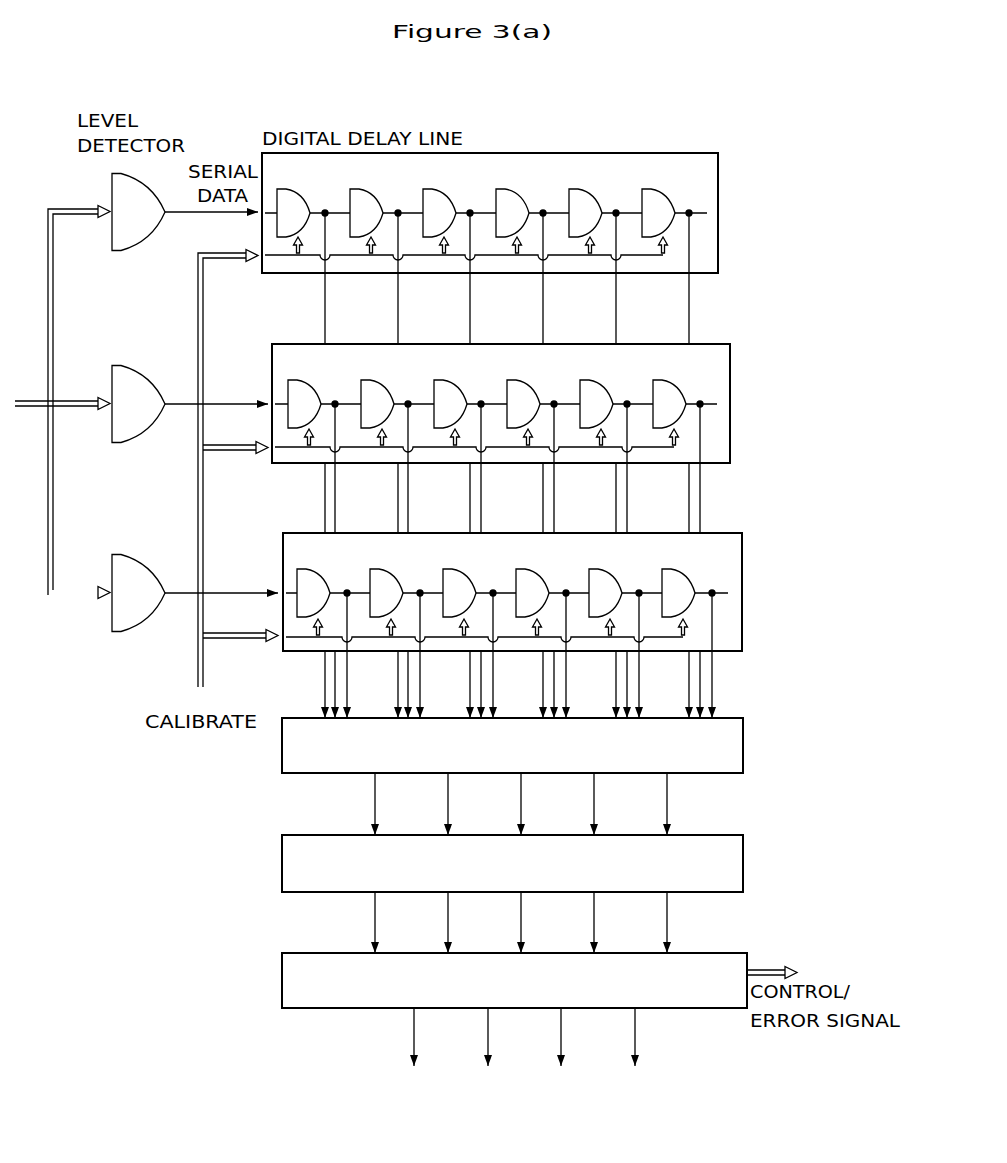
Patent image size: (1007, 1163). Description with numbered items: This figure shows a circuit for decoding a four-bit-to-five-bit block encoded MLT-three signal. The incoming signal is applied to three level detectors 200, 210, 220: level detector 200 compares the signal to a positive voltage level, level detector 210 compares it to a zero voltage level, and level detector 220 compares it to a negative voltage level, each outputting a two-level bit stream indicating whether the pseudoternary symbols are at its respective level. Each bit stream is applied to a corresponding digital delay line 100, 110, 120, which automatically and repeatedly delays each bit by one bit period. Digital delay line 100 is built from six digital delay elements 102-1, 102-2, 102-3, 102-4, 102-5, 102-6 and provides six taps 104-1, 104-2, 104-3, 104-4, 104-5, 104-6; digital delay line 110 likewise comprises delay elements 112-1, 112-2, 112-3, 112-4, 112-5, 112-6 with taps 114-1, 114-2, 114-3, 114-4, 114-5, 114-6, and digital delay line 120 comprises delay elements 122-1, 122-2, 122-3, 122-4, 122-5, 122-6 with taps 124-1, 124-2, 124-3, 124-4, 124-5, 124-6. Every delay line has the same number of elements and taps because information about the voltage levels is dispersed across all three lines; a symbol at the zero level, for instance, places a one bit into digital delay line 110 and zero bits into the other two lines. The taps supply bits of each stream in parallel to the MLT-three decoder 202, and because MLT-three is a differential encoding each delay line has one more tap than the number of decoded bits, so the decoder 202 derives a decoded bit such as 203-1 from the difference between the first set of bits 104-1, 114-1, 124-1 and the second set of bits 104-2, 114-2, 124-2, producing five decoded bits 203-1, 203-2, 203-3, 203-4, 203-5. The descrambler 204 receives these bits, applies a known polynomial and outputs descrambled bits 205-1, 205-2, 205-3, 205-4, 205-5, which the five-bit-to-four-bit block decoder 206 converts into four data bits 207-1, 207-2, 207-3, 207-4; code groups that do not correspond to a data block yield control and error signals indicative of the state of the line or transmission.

The digital delay line 100 is at (490, 199).
The digital delay element 102-1 is at (307, 211).
The digital delay element 102-2 is at (380, 211).
The digital delay element 102-3 is at (453, 211).
The digital delay element 102-4 is at (526, 211).
The digital delay element 102-5 is at (599, 211).
The digital delay element 102-6 is at (672, 211).
The tap 104-1 is at (351, 278).
The tap 104-2 is at (424, 278).
The tap 104-3 is at (497, 278).
The tap 104-4 is at (570, 278).
The tap 104-5 is at (643, 278).
The tap 104-6 is at (716, 278).
The digital delay line 110 is at (501, 390).
The digital delay element 112-1 is at (319, 403).
The digital delay element 112-2 is at (392, 403).
The digital delay element 112-3 is at (465, 403).
The digital delay element 112-4 is at (538, 403).
The digital delay element 112-5 is at (611, 403).
The digital delay element 112-6 is at (684, 403).
The tap 114-1 is at (356, 468).
The tap 114-2 is at (429, 468).
The tap 114-3 is at (502, 468).
The tap 114-4 is at (575, 468).
The tap 114-5 is at (648, 468).
The tap 114-6 is at (721, 468).
The digital delay line 120 is at (513, 579).
The digital delay element 122-1 is at (329, 593).
The digital delay element 122-2 is at (402, 593).
The digital delay element 122-3 is at (475, 593).
The digital delay element 122-4 is at (548, 593).
The digital delay element 122-5 is at (621, 593).
The digital delay element 122-6 is at (694, 593).
The tap 124-1 is at (359, 655).
The tap 124-2 is at (432, 655).
The tap 124-3 is at (505, 655).
The tap 124-4 is at (578, 655).
The tap 124-5 is at (651, 655).
The tap 124-6 is at (724, 655).
The level detector 200 is at (185, 209).
The level detector 210 is at (190, 401).
The level detector 220 is at (195, 591).
The MLT-3 decoder 202 is at (516, 730).
The decoded bit 203-1 is at (400, 804).
The decoded bit 203-2 is at (473, 804).
The decoded bit 203-3 is at (546, 804).
The decoded bit 203-4 is at (619, 804).
The decoded bit 203-5 is at (692, 804).
The descrambler 204 is at (514, 851).
The descrambled bit 205-1 is at (400, 922).
The descrambled bit 205-2 is at (473, 922).
The descrambled bit 205-3 is at (546, 922).
The descrambled bit 205-4 is at (619, 922).
The descrambled bit 205-5 is at (692, 922).
The 5B/4B block decoder 206 is at (514, 968).
The data bit 207-1 is at (439, 1037).
The data bit 207-2 is at (513, 1037).
The data bit 207-3 is at (586, 1037).
The data bit 207-4 is at (660, 1037).